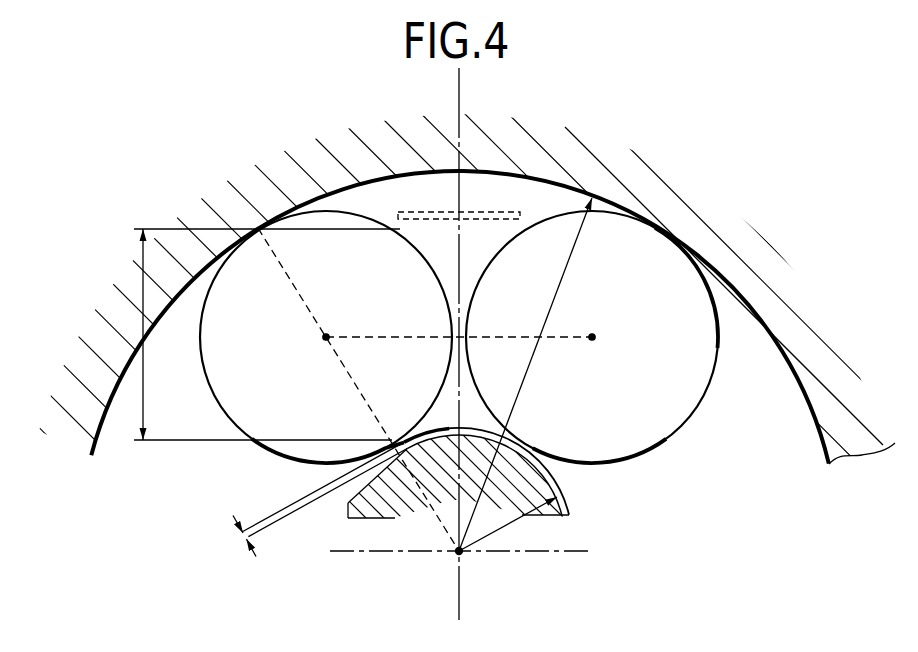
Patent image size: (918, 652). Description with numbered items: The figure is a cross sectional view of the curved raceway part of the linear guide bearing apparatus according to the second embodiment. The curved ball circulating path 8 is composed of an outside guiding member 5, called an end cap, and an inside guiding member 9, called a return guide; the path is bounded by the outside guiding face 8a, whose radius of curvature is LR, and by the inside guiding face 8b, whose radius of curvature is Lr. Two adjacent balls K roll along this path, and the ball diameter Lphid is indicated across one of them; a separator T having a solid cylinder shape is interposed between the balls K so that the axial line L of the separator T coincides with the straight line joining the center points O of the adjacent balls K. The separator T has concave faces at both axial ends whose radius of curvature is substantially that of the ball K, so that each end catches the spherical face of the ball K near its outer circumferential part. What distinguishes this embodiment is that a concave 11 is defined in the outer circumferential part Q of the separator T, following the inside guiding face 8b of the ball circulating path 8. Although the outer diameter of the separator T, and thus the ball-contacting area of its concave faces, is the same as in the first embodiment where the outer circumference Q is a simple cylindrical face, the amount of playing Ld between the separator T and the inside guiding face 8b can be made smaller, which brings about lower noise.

The outside guiding member 5 is at (780, 343).
The ball circulating path 8 is at (703, 478).
The outside guiding face 8a is at (810, 403).
The inside guiding face 8b is at (566, 486).
The inside guiding member 9 is at (385, 519).
The concave 11 is at (447, 441).
The ball K is at (333, 220).
The separator T is at (476, 257).
The axial line of the separator L is at (418, 335).
The center point of the ball O is at (459, 337).
The outer circumferential part of the separator Q is at (456, 549).
The radius of the outside guiding face LR is at (525, 374).
The radius of the inside guiding face Lr is at (508, 519).
The amount of playing Ld is at (268, 547).
The ball diameter Lphid is at (255, 334).